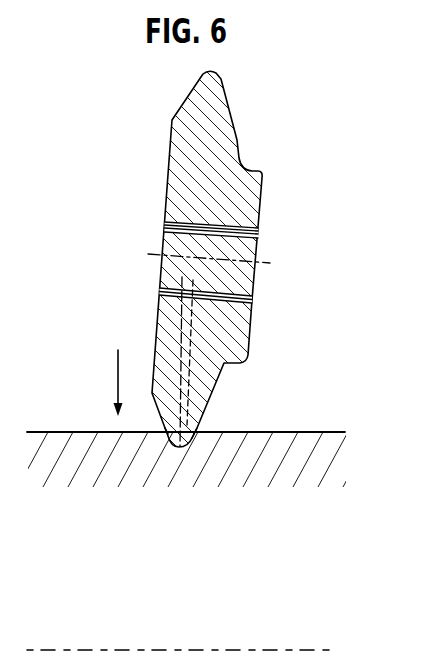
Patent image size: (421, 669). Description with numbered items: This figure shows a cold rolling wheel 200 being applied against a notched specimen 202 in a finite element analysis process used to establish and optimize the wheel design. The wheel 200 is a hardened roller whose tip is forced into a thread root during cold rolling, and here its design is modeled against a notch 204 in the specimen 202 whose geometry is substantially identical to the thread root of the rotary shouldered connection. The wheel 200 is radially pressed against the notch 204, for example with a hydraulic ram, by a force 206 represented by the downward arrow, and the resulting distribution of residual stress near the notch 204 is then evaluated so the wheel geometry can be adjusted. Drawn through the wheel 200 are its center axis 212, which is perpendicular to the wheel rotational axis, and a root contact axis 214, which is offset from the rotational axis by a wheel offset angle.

The wheel 200 is at (155, 163).
The notched specimen 202 is at (277, 432).
The notch 204 is at (217, 418).
The force 206 is at (116, 369).
The center axis 212 is at (193, 341).
The root contact axis 214 is at (181, 316).